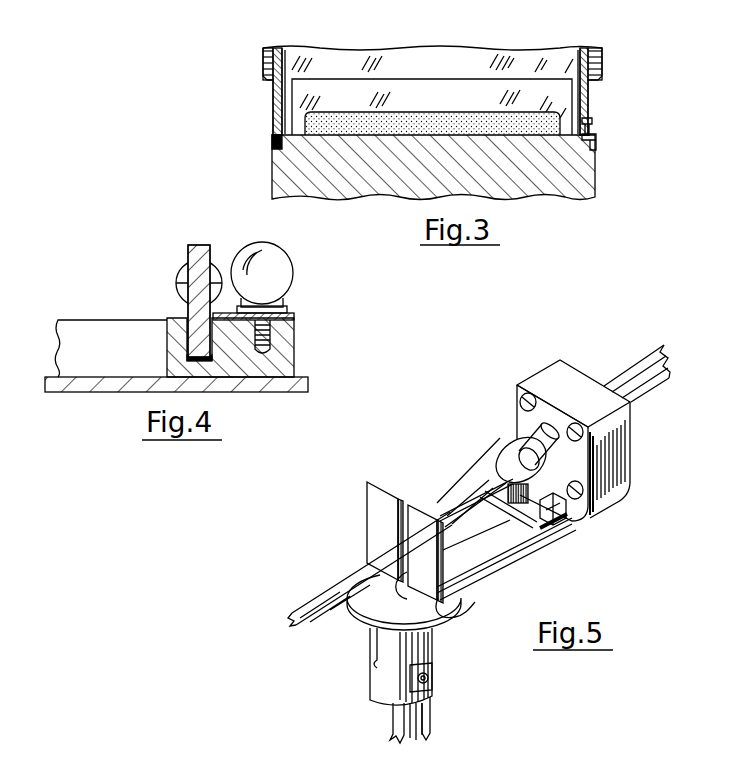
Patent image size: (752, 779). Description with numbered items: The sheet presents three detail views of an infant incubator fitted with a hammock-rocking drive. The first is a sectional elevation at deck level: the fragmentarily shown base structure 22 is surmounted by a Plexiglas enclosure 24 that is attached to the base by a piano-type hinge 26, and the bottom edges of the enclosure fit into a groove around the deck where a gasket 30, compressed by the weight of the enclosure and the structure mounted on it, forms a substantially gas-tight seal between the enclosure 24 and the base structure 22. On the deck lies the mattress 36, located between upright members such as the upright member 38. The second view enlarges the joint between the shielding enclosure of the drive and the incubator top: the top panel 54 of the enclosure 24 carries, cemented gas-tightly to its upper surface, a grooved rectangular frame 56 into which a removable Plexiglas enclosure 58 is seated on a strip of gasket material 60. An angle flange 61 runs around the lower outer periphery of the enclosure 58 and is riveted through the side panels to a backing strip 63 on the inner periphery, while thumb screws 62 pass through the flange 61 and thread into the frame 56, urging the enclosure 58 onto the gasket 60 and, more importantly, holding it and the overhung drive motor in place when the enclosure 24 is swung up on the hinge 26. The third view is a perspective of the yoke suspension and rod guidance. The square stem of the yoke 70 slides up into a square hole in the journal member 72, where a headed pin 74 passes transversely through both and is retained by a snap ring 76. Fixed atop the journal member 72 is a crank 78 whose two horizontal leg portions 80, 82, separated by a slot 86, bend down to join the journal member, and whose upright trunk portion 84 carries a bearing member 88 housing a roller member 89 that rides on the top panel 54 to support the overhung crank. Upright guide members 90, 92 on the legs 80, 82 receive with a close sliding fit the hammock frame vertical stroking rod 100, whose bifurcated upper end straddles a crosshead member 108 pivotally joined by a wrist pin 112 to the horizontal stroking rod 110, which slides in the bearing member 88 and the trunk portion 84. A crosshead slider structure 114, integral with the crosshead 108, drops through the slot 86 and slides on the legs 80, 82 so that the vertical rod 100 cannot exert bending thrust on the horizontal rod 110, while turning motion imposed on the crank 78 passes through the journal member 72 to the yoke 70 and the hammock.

In FIG. 3, the base structure 22 is at (596, 176).
In FIG. 3, the Plexiglas enclosure 24 is at (527, 48).
In FIG. 3, the piano-type hinge 26 is at (598, 133).
In FIG. 3, the gasket 30 is at (272, 150).
In FIG. 3, the mattress 36 is at (440, 106).
In FIG. 3, the upright member 38 is at (411, 81).
In FIG. 4, the top panel 54 is at (306, 377).
In FIG. 4, the rectangular frame 56 is at (297, 333).
In FIG. 4, the enclosure 58 is at (187, 254).
In FIG. 4, the gasket material strip 60 is at (187, 360).
In FIG. 4, the angle flange 61 is at (297, 314).
In FIG. 4, the thumb screw 62 is at (288, 271).
In FIG. 4, the backing strip 63 is at (183, 274).
In FIG. 5, the yoke 70 is at (393, 722).
In FIG. 5, the journal member 72 is at (371, 628).
In FIG. 5, the pin 74 is at (372, 680).
In FIG. 5, the snap ring 76 is at (432, 675).
In FIG. 5, the crank 78 is at (525, 567).
In FIG. 5, the leg portion 80 is at (454, 518).
In FIG. 5, the leg portion 82 is at (477, 580).
In FIG. 5, the trunk portion 84 is at (519, 387).
In FIG. 5, the slot 86 is at (458, 543).
In FIG. 5, the bearing member 88 is at (571, 379).
In FIG. 5, the roller member 89 is at (614, 507).
In FIG. 5, the guide member 90 is at (368, 470).
In FIG. 5, the guide member 92 is at (432, 485).
In FIG. 5, the hammock frame vertical stroking rod 100 is at (334, 575).
In FIG. 5, the crosshead member 108 is at (508, 414).
In FIG. 5, the horizontal stroking rod 110 is at (646, 351).
In FIG. 5, the wrist pin 112 is at (539, 462).
In FIG. 5, the crosshead slider structure 114 is at (566, 522).